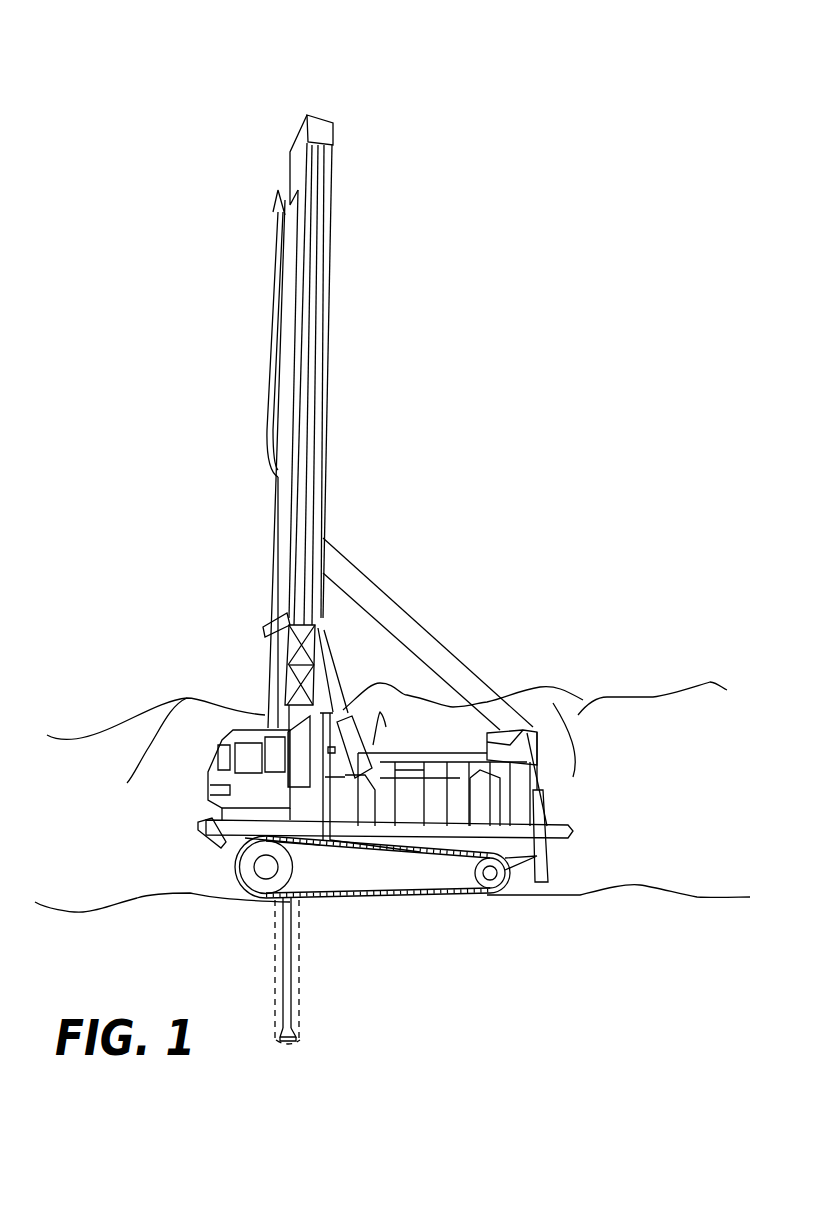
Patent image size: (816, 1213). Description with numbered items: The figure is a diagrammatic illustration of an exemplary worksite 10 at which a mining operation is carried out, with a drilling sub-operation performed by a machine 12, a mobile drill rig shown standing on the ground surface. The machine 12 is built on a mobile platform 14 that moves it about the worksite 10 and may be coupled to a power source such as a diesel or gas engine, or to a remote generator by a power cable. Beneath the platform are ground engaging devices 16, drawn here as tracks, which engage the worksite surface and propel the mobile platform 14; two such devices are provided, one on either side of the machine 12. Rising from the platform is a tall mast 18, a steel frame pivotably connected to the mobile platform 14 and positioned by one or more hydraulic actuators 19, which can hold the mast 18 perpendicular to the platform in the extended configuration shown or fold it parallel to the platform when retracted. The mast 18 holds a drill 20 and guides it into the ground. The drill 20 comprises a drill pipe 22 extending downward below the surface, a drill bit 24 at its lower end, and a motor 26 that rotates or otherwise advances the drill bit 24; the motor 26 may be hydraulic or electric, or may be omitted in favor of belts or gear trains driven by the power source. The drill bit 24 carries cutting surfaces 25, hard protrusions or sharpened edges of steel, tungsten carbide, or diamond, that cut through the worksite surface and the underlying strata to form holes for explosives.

The worksite 10 is at (657, 750).
The machine 12 is at (556, 77).
The mobile platform 14 is at (576, 832).
The ground engaging devices 16 is at (507, 893).
The mast 18 is at (333, 180).
The hydraulic actuators 19 is at (378, 582).
The drill 20 is at (220, 529).
The drill pipe 22 is at (290, 987).
The drill bit 24 is at (298, 1028).
The cutting surfaces 25 is at (297, 1043).
The motor 26 is at (421, 718).